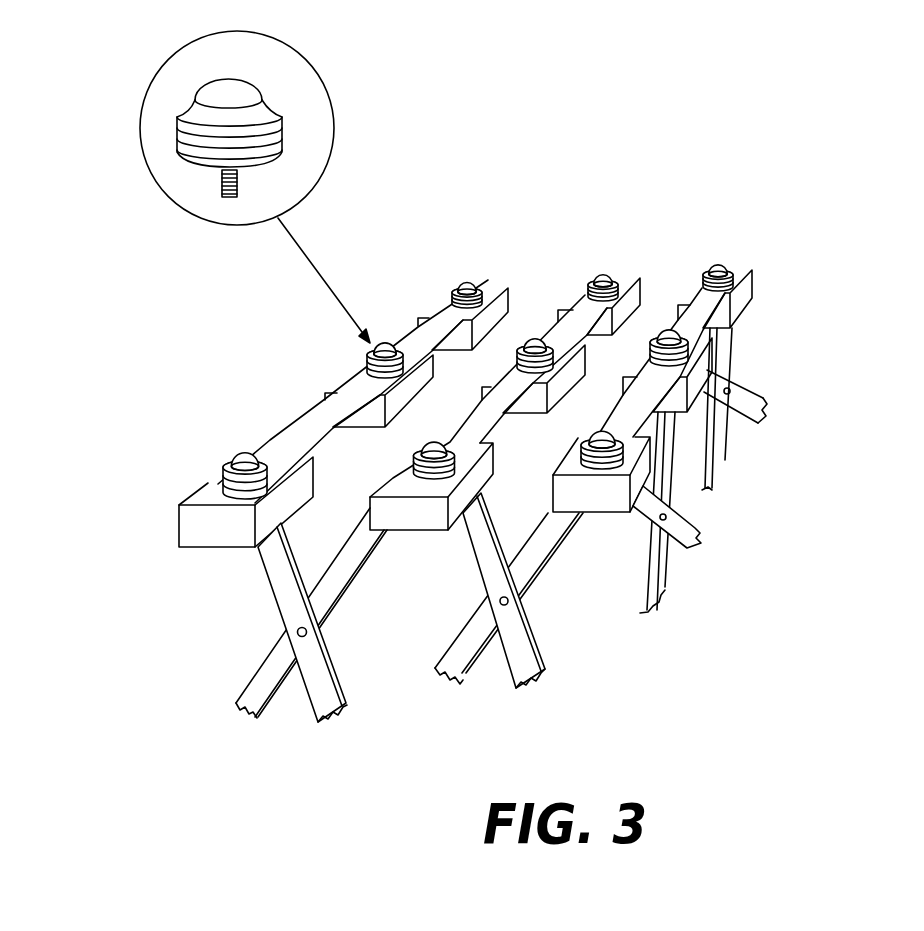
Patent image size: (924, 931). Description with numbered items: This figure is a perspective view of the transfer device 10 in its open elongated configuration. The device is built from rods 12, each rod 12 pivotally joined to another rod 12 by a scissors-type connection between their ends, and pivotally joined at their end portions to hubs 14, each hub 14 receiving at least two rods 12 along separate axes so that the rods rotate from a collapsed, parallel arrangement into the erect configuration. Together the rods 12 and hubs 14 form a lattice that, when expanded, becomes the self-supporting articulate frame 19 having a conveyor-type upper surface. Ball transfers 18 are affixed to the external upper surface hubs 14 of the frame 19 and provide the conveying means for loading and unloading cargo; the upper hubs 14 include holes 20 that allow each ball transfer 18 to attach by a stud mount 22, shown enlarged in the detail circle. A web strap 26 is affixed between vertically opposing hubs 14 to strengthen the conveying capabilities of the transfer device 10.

The transfer device 10 is at (517, 396).
The rod 12 is at (508, 578).
The hub 14 is at (747, 297).
The ball transfer 18 is at (272, 121).
The frame 19 is at (262, 634).
The hole 20 is at (222, 488).
The stud mount 22 is at (223, 177).
The web strap 26 is at (302, 426).